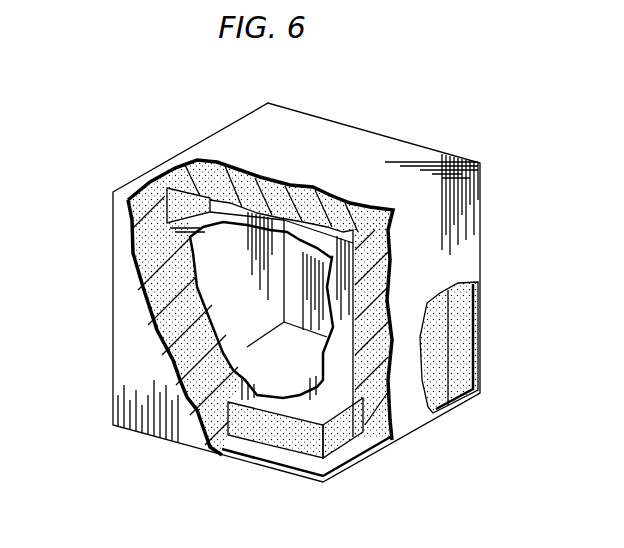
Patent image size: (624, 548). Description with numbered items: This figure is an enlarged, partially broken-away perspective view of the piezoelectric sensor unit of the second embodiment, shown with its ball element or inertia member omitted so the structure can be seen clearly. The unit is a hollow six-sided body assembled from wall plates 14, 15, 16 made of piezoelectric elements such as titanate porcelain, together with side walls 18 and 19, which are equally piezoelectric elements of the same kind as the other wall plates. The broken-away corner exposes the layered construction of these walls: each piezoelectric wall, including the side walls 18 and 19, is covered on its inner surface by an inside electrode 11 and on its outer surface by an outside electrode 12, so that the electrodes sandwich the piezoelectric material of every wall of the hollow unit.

The inside electrode 11 is at (238, 217).
The outside electrode 12 is at (115, 300).
The wall plate 14 is at (343, 437).
The wall plate 15 is at (190, 200).
The wall plate 16 is at (370, 380).
The side wall 18 is at (462, 330).
The side wall 19 is at (143, 250).